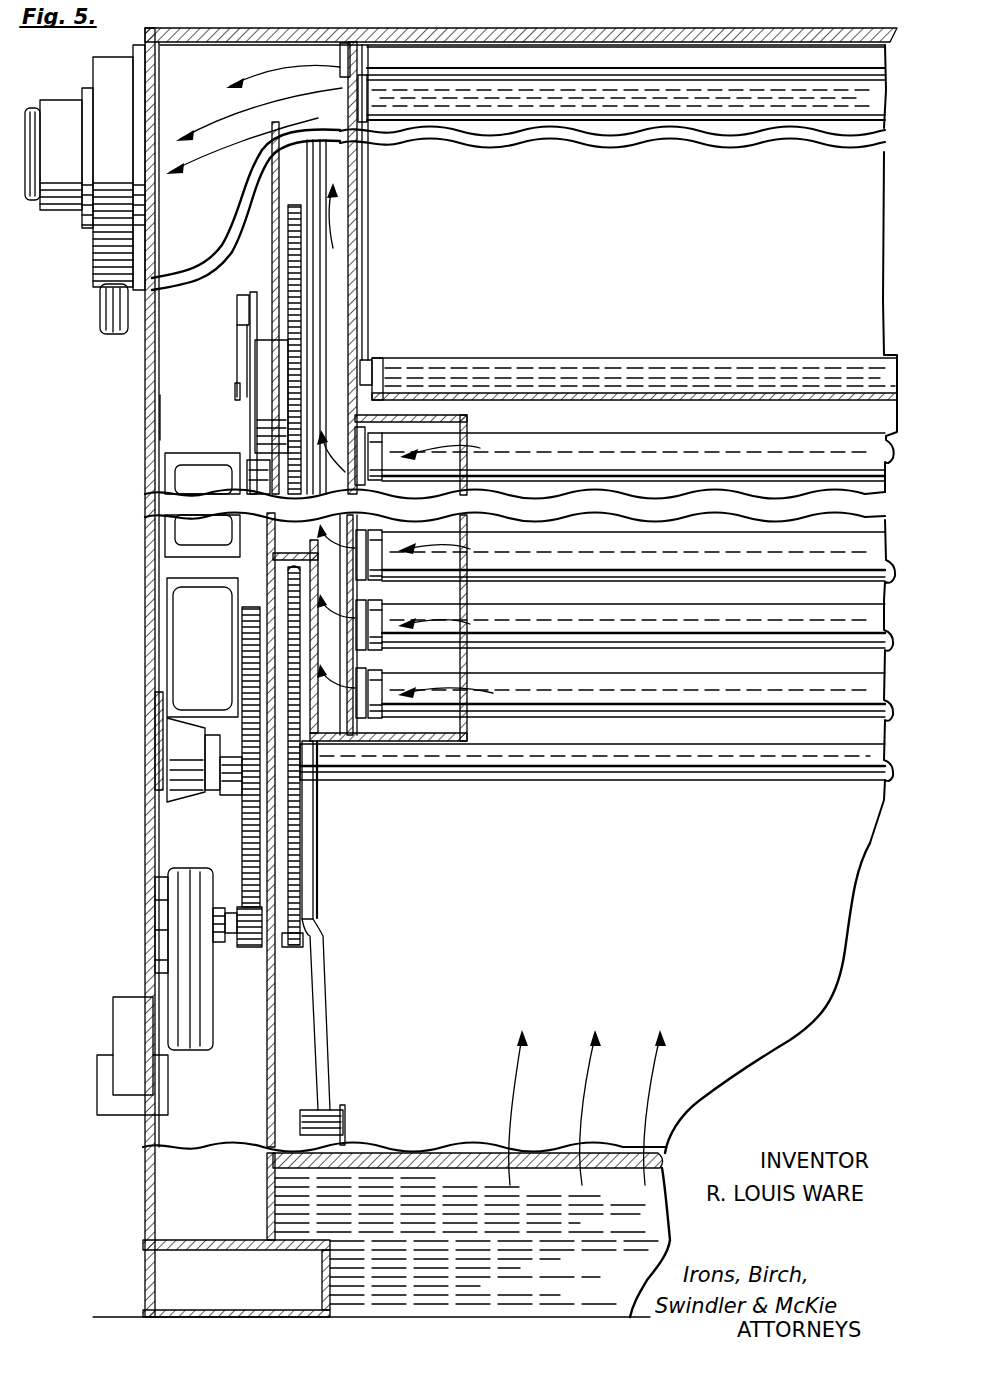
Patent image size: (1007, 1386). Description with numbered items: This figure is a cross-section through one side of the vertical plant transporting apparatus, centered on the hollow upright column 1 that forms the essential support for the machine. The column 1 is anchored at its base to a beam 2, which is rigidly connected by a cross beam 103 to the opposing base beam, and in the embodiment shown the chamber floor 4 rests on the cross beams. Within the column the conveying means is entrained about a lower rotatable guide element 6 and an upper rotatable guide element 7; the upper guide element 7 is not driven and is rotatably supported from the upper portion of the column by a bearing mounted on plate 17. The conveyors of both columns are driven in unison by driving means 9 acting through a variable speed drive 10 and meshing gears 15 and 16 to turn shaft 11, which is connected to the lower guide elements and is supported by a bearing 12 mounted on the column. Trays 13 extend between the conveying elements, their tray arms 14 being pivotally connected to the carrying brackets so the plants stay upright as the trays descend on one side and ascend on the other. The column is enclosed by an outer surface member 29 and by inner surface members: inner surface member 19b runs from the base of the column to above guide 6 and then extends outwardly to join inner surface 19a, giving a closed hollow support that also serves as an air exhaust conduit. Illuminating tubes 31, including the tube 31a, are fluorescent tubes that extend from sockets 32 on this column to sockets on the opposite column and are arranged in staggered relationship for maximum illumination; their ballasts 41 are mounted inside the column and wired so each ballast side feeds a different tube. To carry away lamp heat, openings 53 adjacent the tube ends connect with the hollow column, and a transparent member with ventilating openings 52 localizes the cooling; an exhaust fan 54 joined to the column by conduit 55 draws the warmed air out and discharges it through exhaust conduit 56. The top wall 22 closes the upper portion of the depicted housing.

The upright column 1 is at (143, 415).
The beam 2 is at (136, 1283).
The chamber floor 4 is at (441, 1156).
The rotatable guide element 6 is at (302, 918).
The rotatable guide element 7 is at (290, 356).
The driving means 9 is at (141, 1000).
The variable speed drive 10 is at (188, 870).
The shaft 11 is at (604, 773).
The bearing 12 is at (173, 747).
The tray 13 is at (771, 373).
The tray arm 14 is at (368, 290).
The gear 15 is at (247, 948).
The gear 16 is at (242, 834).
The plate 17 is at (251, 344).
The inner surface member 19a is at (356, 526).
The inner surface member 19b is at (276, 1032).
The top wall 22 is at (573, 29).
The outer surface member 29 is at (152, 350).
The illuminating tube 31 is at (638, 650).
The roller 31a is at (583, 578).
The socket 32 is at (365, 686).
The ballast 41 is at (166, 486).
The ventilating opening 52 is at (480, 448).
The opening 53 is at (357, 447).
The exhaust fan 54 is at (88, 80).
The conduit 55 is at (667, 96).
The exhaust conduit 56 is at (104, 306).
The cross beam 103 is at (618, 1254).